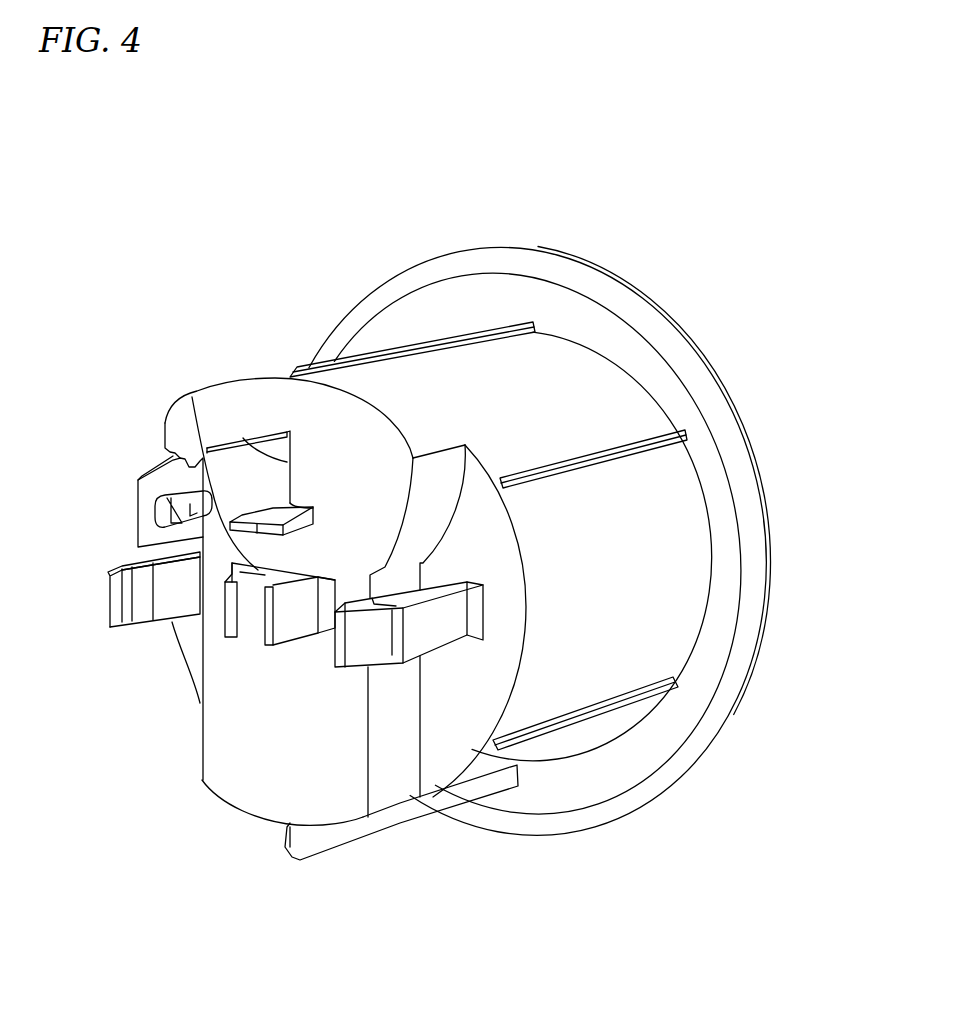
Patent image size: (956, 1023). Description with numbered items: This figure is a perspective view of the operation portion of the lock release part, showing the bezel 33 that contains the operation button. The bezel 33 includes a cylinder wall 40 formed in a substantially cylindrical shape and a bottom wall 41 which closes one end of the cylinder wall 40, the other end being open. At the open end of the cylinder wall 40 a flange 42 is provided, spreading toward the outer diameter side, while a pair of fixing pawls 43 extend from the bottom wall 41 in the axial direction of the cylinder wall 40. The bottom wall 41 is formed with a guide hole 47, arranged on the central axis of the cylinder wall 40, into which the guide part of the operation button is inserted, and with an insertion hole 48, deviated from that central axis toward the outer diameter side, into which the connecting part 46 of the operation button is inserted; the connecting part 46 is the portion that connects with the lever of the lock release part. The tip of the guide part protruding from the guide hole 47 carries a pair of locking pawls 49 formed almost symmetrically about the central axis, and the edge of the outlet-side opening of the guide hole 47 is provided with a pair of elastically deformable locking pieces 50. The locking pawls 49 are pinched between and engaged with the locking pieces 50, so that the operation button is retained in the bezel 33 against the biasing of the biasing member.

The bezel 33 is at (657, 304).
The cylinder wall 40 is at (573, 677).
The bottom wall 41 is at (248, 783).
The flange 42 is at (768, 593).
The fixing pawls 43 is at (125, 572).
The connecting part 46 is at (141, 470).
The guide hole 47 is at (192, 397).
The insertion hole 48 is at (243, 438).
The locking pawls 49 is at (230, 625).
The locking pieces 50 is at (326, 637).